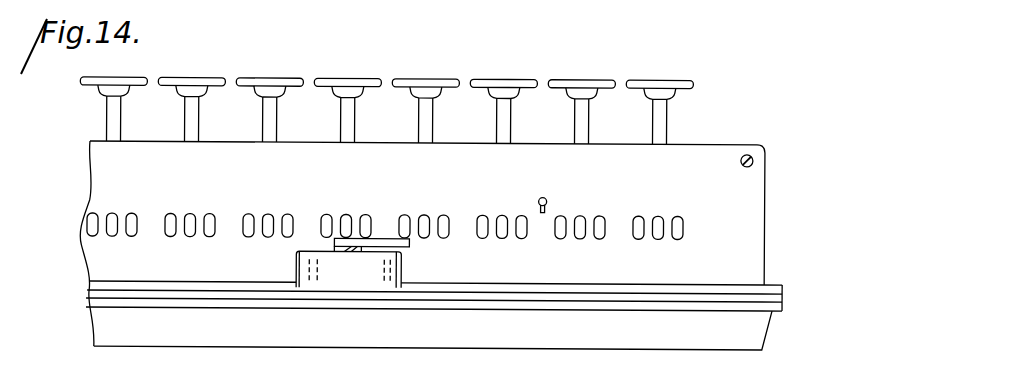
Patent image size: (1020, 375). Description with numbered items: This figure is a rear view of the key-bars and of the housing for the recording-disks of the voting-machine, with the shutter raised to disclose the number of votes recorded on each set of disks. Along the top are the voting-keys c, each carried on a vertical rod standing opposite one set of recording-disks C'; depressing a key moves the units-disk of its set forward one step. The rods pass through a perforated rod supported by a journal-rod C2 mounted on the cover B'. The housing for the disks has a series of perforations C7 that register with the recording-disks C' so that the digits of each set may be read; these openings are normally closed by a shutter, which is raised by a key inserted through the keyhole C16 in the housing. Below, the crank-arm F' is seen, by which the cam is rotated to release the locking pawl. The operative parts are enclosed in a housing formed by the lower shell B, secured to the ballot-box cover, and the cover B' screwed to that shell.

The voting-key c is at (181, 70).
The recording-disks C' is at (386, 120).
The journal-rod C2 is at (694, 147).
The perforations C7 is at (273, 205).
The keyhole C16 is at (554, 201).
The crank-arm F' is at (353, 235).
The cover B' is at (450, 296).
The lower shell B is at (445, 328).